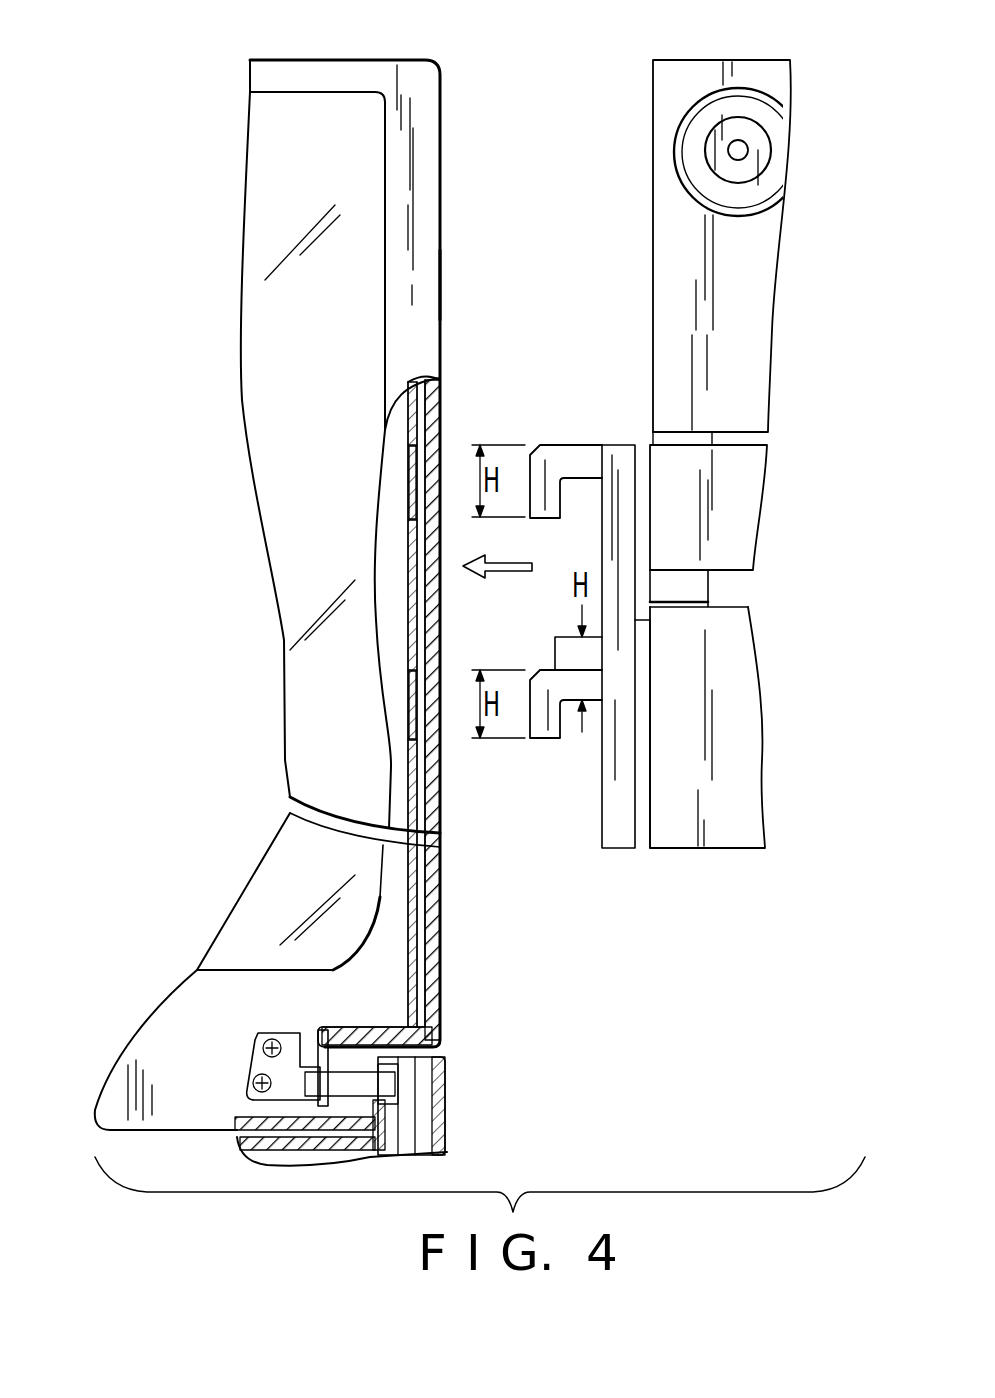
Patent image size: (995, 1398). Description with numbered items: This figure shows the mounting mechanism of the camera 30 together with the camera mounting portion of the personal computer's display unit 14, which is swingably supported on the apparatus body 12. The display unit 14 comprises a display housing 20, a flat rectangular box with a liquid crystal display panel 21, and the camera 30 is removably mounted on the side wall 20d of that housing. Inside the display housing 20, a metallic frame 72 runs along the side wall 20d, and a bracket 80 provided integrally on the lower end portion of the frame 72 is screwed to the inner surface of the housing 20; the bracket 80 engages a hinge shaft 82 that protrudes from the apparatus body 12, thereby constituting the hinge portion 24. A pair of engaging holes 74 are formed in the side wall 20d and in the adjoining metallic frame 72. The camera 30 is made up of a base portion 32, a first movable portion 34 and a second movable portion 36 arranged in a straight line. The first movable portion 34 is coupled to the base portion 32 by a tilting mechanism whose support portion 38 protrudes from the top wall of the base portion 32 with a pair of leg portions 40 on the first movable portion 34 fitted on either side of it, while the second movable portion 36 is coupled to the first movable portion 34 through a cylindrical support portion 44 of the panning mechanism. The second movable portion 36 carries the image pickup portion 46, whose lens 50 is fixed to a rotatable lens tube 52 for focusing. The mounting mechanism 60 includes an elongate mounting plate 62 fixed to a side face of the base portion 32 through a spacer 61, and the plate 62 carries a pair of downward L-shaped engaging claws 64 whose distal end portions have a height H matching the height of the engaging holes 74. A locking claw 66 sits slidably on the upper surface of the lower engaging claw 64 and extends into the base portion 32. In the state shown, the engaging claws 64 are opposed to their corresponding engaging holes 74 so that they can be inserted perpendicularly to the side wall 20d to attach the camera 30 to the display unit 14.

The apparatus body 12 is at (440, 1110).
The display unit 14 is at (440, 128).
The display housing 20 is at (441, 79).
The side wall 20d is at (440, 282).
The liquid crystal display panel 21 is at (373, 232).
The hinge portion 24 is at (247, 1057).
The camera 30 is at (690, 425).
The base portion 32 is at (752, 748).
The first movable portion 34 is at (752, 515).
The second movable portion 36 is at (762, 360).
The support portion 38 is at (742, 597).
The leg portions 40 is at (700, 582).
The cylindrical support portion 44 is at (745, 436).
The image pickup portion 46 is at (670, 139).
The lens 50 is at (748, 149).
The lens tube 52 is at (700, 98).
The mounting mechanism 60 is at (589, 623).
The spacer 61 is at (641, 848).
The mounting plate 62 is at (612, 826).
The engaging claws 64 is at (577, 448).
The locking claw 66 is at (557, 652).
The metallic frame 72 is at (415, 606).
The engaging holes 74 is at (414, 482).
The bracket 80 is at (300, 1046).
The hinge shaft 82 is at (340, 1046).